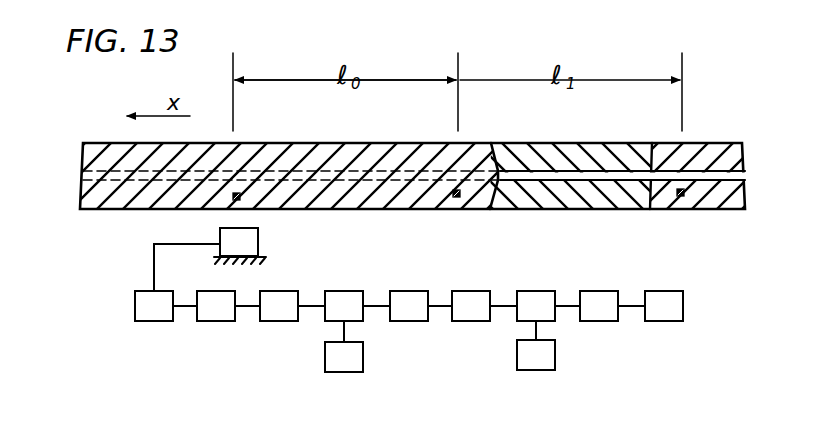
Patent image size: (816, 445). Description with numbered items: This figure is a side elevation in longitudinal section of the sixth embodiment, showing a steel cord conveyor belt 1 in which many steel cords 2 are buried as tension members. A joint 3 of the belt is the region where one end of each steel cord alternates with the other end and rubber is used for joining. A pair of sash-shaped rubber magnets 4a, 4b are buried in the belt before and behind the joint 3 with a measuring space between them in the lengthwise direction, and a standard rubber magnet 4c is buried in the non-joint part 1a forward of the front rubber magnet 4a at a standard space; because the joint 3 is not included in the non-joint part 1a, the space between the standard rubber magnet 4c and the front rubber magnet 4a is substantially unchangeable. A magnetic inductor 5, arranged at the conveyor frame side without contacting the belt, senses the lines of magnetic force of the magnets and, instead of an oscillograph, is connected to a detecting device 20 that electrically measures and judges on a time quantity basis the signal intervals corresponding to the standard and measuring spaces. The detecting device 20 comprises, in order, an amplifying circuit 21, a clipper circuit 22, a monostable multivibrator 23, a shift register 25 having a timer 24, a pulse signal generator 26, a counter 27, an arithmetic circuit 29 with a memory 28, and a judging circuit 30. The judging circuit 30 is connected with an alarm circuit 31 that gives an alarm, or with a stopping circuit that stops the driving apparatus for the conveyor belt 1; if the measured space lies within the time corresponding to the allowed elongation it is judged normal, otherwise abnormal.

The steel cord conveyor belt 1 is at (362, 141).
The non-joint part 1a is at (273, 144).
The steel cords 2 is at (170, 165).
The joint 3 is at (566, 143).
The front rubber magnet 4a is at (455, 198).
The rear rubber magnet 4b is at (679, 197).
The standard rubber magnet 4c is at (232, 199).
The magnetic inductor 5 is at (258, 240).
The detecting device 20 is at (461, 332).
The amplifying circuit 21 is at (154, 306).
The clipper circuit 22 is at (216, 306).
The monostable multivibrator 23 is at (279, 306).
The timer 24 is at (344, 357).
The shift register 25 is at (344, 306).
The pulse signal generator 26 is at (409, 306).
The counter 27 is at (471, 306).
The memory 28 is at (536, 355).
The arithmetic circuit 29 is at (536, 306).
The judging circuit 30 is at (599, 306).
The alarm circuit 31 is at (664, 306).